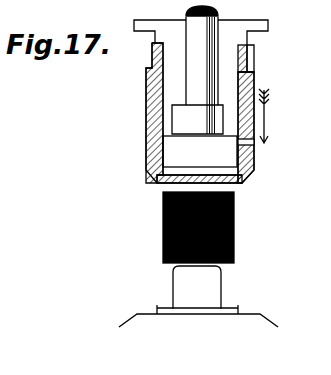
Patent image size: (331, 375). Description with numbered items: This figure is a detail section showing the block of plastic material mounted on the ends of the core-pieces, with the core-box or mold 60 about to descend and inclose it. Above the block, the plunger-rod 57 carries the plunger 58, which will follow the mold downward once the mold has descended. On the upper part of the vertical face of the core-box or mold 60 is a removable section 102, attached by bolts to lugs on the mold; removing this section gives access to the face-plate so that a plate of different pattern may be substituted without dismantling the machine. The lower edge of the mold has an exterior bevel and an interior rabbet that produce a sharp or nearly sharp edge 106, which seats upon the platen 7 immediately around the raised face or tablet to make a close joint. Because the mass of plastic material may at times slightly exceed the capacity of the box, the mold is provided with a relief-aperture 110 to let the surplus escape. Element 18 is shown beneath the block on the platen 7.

The plunger-rod 57 is at (202, 70).
The core-box or mold 60 is at (187, 113).
The removable section 102 is at (248, 56).
The sharp edge 106 is at (197, 119).
The plunger 58 is at (200, 151).
The relief-aperture 110 is at (253, 146).
The support 18 is at (197, 287).
The platen 7 is at (198, 318).